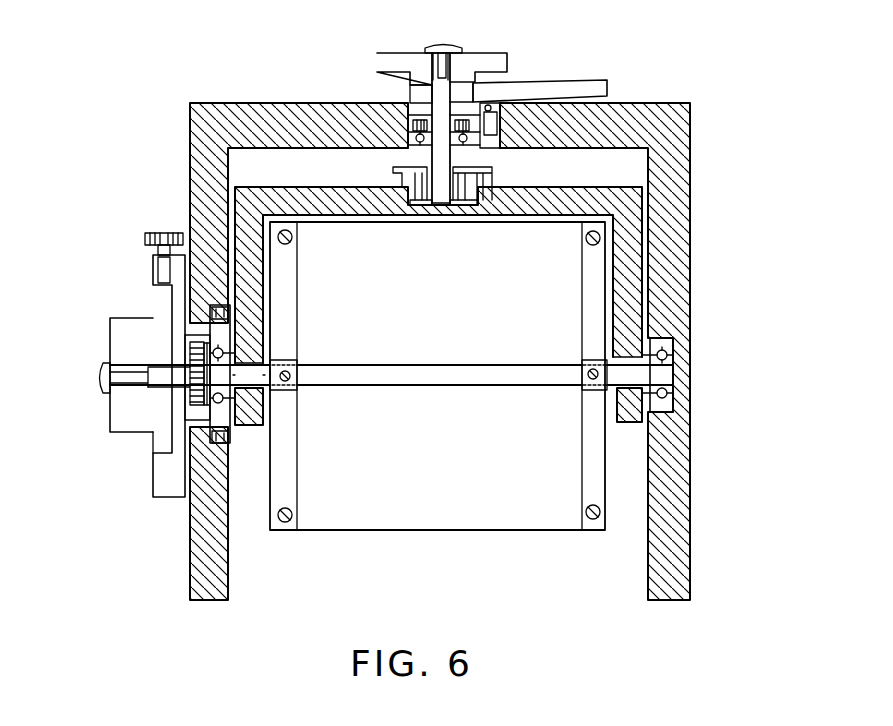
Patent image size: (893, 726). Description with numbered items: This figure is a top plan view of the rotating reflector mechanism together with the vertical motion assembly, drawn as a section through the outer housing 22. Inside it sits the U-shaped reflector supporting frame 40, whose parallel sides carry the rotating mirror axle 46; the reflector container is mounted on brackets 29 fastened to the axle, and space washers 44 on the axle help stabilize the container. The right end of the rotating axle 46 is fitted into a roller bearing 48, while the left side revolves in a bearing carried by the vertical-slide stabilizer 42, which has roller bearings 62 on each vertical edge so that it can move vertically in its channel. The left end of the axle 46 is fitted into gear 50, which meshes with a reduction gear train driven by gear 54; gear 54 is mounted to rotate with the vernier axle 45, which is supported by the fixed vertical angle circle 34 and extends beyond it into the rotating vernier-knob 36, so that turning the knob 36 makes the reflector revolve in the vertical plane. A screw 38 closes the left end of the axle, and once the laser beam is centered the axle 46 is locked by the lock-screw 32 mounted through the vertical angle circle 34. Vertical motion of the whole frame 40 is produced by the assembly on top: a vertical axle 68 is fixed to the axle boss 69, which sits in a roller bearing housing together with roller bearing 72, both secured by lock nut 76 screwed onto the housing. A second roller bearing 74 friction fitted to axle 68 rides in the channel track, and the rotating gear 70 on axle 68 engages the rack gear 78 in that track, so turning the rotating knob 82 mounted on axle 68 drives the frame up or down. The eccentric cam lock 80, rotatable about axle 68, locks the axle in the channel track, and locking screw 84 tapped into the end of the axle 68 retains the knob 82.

The housing 22 is at (190, 138).
The supporting frame 40 is at (250, 207).
The brackets 29 is at (592, 438).
The rotating axle 46 is at (517, 378).
The roller bearing 48 is at (677, 407).
The vertical-slide stabilizer 42 is at (223, 328).
The roller bearings 62 is at (223, 313).
The space washers 44 is at (243, 427).
The vertical angle circle 34 is at (180, 308).
The lock-screw 32 is at (143, 236).
The vernier-knob 36 is at (143, 345).
The screw 38 is at (103, 380).
The vernier axle 45 is at (180, 377).
The gear 54 is at (190, 392).
The gear 50 is at (192, 402).
The axle 68 is at (438, 205).
The rotating gear 70 is at (462, 122).
The roller bearing 74 is at (412, 145).
The rack gear 78 is at (482, 135).
The roller bearing 72 is at (415, 183).
The lock nut 76 is at (490, 177).
The axle boss 69 is at (468, 205).
The rotating knob 82 is at (473, 62).
The locking screw 84 is at (450, 45).
The eccentric cam lock 80 is at (507, 92).